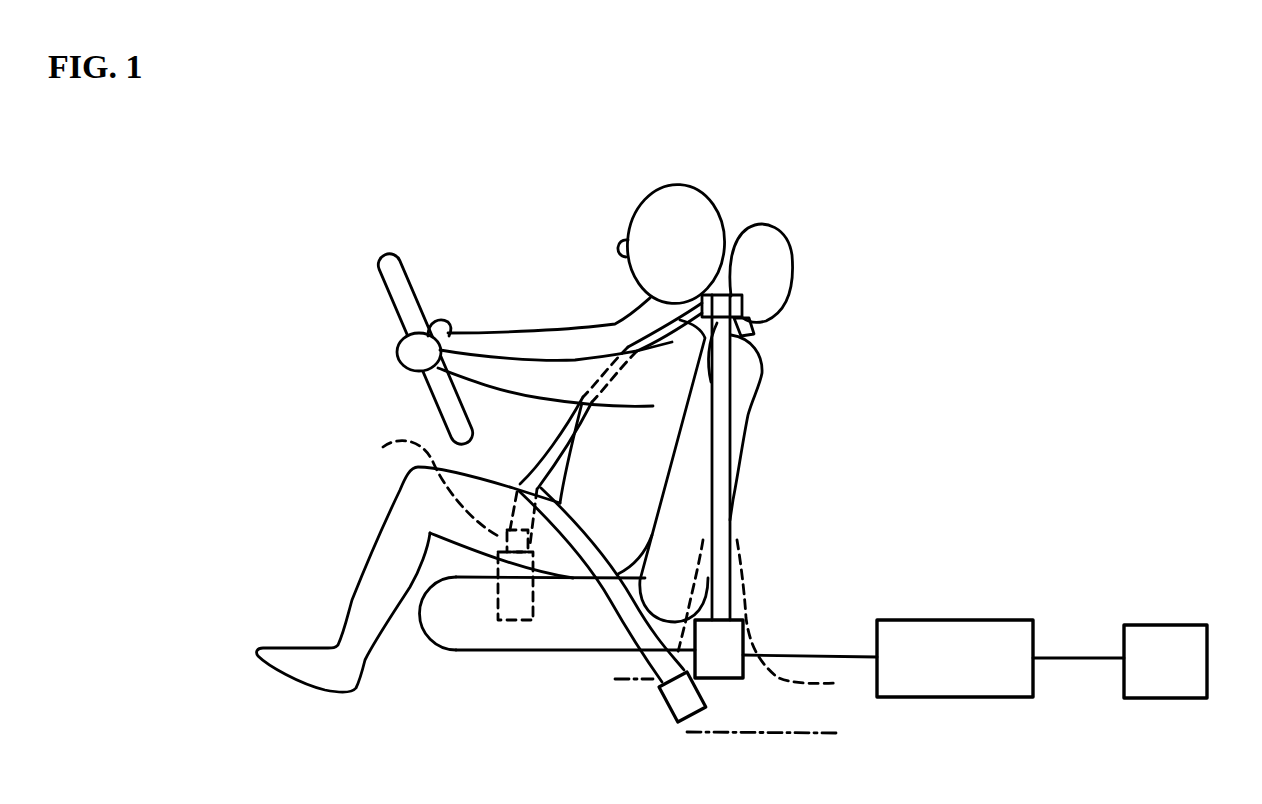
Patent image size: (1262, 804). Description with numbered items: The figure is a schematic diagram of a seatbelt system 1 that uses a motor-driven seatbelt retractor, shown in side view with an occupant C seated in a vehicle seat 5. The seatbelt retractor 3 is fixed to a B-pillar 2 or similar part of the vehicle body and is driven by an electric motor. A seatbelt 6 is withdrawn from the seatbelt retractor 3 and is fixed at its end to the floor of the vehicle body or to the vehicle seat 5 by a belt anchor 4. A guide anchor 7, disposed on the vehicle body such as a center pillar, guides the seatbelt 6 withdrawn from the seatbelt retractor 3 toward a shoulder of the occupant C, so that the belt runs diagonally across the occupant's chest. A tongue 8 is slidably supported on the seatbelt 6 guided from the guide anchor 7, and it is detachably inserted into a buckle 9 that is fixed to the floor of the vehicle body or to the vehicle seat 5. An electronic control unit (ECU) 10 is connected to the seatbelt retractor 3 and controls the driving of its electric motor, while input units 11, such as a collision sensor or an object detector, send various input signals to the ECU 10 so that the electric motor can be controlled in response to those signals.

The occupant C is at (562, 326).
The seatbelt system 1 is at (993, 371).
The B-pillar 2 is at (745, 590).
The seatbelt retractor 3 is at (718, 681).
The belt anchor 4 is at (667, 708).
The vehicle seat 5 is at (756, 398).
The seatbelt 6 is at (731, 523).
The guide anchor 7 is at (731, 292).
The tongue 8 is at (430, 488).
The buckle 9 is at (513, 603).
The electronic control unit (ECU) 10 is at (989, 623).
The input units 11 is at (1184, 626).